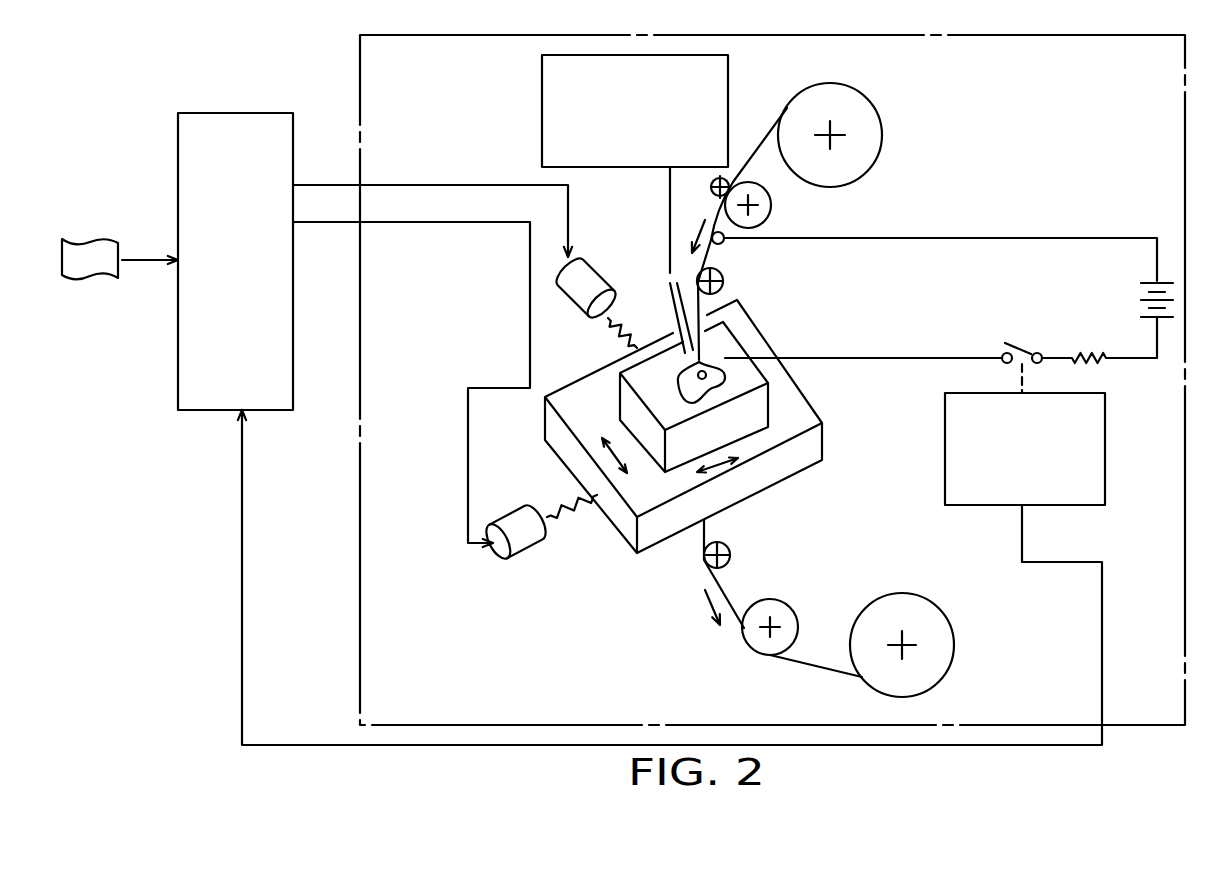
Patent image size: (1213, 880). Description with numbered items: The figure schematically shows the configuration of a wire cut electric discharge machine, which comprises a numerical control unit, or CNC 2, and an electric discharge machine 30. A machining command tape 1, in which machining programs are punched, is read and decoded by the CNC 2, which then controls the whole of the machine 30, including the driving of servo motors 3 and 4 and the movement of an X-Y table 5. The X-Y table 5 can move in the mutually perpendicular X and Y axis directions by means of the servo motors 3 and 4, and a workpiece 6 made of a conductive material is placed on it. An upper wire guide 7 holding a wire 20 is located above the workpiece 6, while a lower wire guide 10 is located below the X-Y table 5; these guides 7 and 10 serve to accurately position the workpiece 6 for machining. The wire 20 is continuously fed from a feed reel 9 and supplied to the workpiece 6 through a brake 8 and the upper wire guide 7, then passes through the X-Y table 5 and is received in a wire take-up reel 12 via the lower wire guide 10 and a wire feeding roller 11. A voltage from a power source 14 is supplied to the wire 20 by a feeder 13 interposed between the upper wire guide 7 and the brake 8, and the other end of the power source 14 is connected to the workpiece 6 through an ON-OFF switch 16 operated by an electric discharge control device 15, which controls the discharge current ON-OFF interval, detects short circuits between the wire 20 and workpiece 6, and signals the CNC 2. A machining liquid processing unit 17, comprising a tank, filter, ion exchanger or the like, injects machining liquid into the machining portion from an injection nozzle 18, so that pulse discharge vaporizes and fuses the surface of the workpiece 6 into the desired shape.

The machining command tape 1 is at (80, 201).
The numerical control unit (CNC) 2 is at (192, 112).
The servo motor 3 is at (527, 555).
The servo motor 4 is at (587, 257).
The X-Y table 5 is at (826, 432).
The workpiece 6 is at (770, 390).
The upper wire guide 7 is at (725, 282).
The brake 8 is at (773, 209).
The feed reel 9 is at (877, 100).
The lower wire guide 10 is at (730, 545).
The wire feeding roller 11 is at (785, 603).
The wire take-up reel 12 is at (955, 637).
The feeder 13 is at (722, 243).
The power source 14 is at (1138, 293).
The electric discharge control device 15 is at (1103, 440).
The ON-OFF switch 16 is at (1012, 340).
The machining liquid processing unit 17 is at (542, 90).
The injection nozzle 18 is at (662, 300).
The wire 20 is at (762, 140).
The electric discharge machine 30 is at (359, 75).